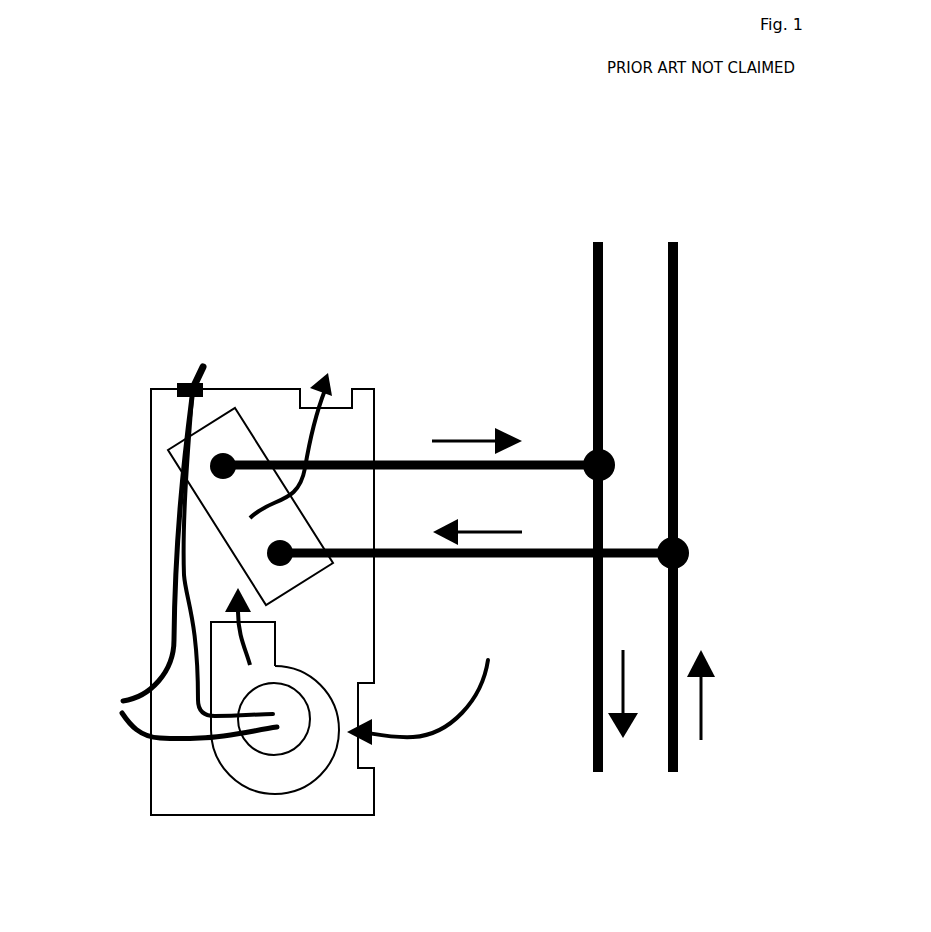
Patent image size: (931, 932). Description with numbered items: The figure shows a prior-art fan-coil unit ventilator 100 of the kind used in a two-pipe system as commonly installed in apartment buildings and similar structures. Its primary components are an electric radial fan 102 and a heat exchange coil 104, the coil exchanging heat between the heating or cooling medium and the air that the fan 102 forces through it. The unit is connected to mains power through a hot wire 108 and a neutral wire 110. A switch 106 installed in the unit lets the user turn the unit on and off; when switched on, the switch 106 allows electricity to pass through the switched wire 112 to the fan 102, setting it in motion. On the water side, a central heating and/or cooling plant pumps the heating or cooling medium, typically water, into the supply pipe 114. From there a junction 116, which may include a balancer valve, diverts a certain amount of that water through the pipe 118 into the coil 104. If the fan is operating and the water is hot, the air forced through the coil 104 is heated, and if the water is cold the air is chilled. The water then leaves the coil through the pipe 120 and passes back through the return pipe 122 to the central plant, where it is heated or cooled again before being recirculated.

The fan-coil unit ventilator 100 is at (140, 436).
The electric radial fan 102 is at (258, 772).
The heat exchange coil 104 is at (235, 436).
The switch 106 is at (187, 371).
The mains power hot wire 108 is at (130, 692).
The mains power neutral wire 110 is at (122, 729).
The mains power switched wire 112 is at (190, 682).
The water pipe from central heating/cooling plant 114 is at (689, 283).
The junction/balancer valve 116 is at (700, 537).
The water pipe into fan-coil unit 118 is at (537, 562).
The water pipe out of fan-coil unit 120 is at (544, 453).
The return water pipe to central heating/cooling plant 122 is at (583, 300).